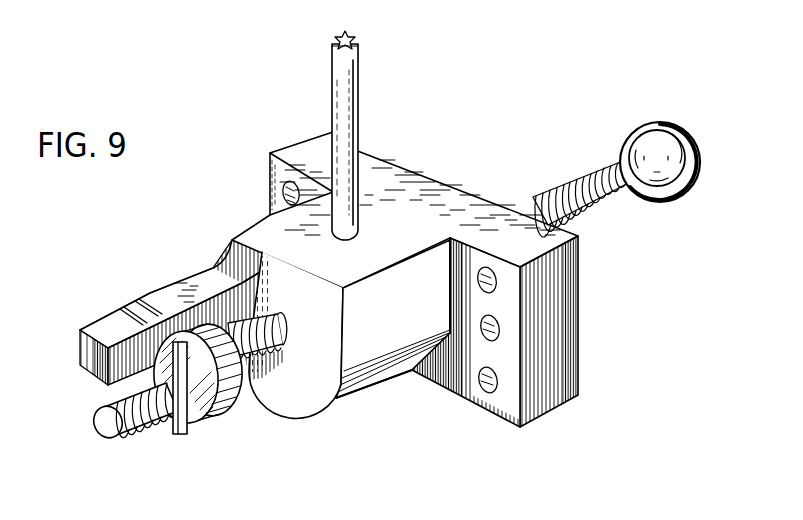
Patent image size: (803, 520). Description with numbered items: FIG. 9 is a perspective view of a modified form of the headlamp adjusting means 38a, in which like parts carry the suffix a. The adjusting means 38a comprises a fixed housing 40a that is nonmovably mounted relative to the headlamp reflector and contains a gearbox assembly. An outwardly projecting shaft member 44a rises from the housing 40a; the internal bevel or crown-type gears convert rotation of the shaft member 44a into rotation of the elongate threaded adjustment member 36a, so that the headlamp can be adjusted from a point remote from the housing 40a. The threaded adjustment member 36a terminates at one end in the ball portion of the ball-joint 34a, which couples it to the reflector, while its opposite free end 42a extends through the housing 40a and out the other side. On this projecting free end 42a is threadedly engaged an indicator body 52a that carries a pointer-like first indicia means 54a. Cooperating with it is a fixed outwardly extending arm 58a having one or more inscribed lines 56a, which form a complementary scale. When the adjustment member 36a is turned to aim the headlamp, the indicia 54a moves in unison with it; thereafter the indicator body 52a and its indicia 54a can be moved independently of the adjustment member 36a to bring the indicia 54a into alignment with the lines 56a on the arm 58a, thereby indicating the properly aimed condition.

The ball-joint 34a is at (693, 160).
The elongate threaded adjustment member 36a is at (547, 192).
The headlamp adjusting means 38a is at (425, 392).
The housing 40a is at (447, 200).
The free end 42a is at (127, 437).
The outwardly projecting shaft member 44a is at (348, 113).
The indicator body 52a is at (193, 440).
The first indicia means 54a is at (224, 422).
The lines 56a is at (130, 287).
The arm 58a is at (186, 294).